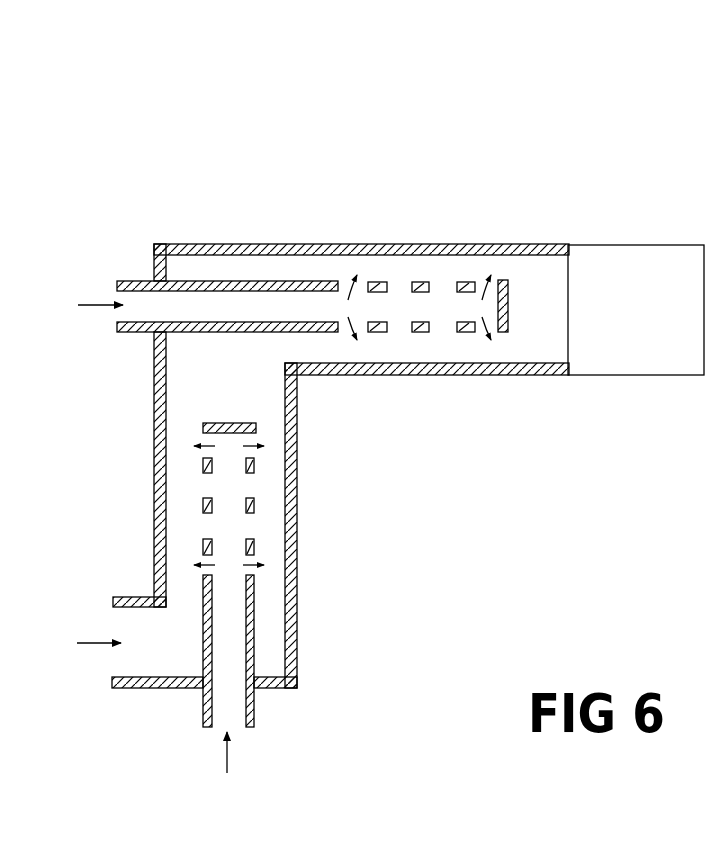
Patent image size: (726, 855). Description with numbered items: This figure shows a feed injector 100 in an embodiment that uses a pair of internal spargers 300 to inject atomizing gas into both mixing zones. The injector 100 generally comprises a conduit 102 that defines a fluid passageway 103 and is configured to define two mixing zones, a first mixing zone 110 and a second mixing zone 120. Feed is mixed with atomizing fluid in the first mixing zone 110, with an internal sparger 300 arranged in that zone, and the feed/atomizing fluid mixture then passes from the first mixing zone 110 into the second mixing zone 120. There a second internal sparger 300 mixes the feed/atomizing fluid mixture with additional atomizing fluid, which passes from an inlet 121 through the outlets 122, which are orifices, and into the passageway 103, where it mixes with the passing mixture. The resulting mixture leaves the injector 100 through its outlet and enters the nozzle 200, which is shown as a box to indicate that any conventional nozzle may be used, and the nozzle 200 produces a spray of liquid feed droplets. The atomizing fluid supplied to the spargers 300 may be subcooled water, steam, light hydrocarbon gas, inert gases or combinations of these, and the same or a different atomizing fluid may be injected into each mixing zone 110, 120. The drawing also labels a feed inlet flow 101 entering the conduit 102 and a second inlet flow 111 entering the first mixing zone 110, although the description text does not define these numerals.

The feed injector 100 is at (318, 137).
The first fluid inlet flow 101 is at (69, 646).
The conduit 102 is at (156, 393).
The fluid passageway 103 is at (257, 387).
The first mixing zone 110 is at (186, 486).
The second fluid inlet flow 111 is at (234, 773).
The second mixing zone 120 is at (446, 267).
The inlet 121 is at (72, 306).
The outlets 122 is at (400, 333).
The nozzle 200 is at (602, 243).
The internal sparger 300 is at (233, 282).